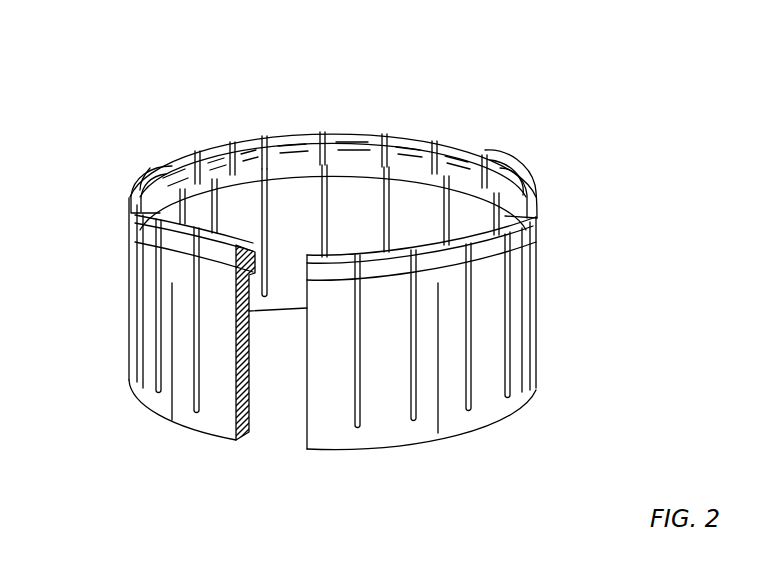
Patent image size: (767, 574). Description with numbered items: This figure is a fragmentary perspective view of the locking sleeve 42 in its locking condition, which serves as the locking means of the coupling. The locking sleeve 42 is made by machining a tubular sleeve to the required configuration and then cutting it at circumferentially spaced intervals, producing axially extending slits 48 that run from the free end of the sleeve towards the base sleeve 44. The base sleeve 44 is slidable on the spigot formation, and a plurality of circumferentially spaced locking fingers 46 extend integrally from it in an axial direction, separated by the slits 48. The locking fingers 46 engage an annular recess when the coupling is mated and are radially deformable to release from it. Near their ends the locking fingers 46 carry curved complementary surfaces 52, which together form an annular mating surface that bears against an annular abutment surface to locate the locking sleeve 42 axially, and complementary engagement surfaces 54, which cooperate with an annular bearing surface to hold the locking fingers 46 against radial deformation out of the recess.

The locking sleeve 42 is at (542, 135).
The base sleeve 44 is at (488, 420).
The locking fingers 46 is at (147, 330).
The axially extending slits 48 is at (319, 128).
The curved complementary surfaces 52 is at (418, 133).
The complementary engagement surfaces 54 is at (182, 247).